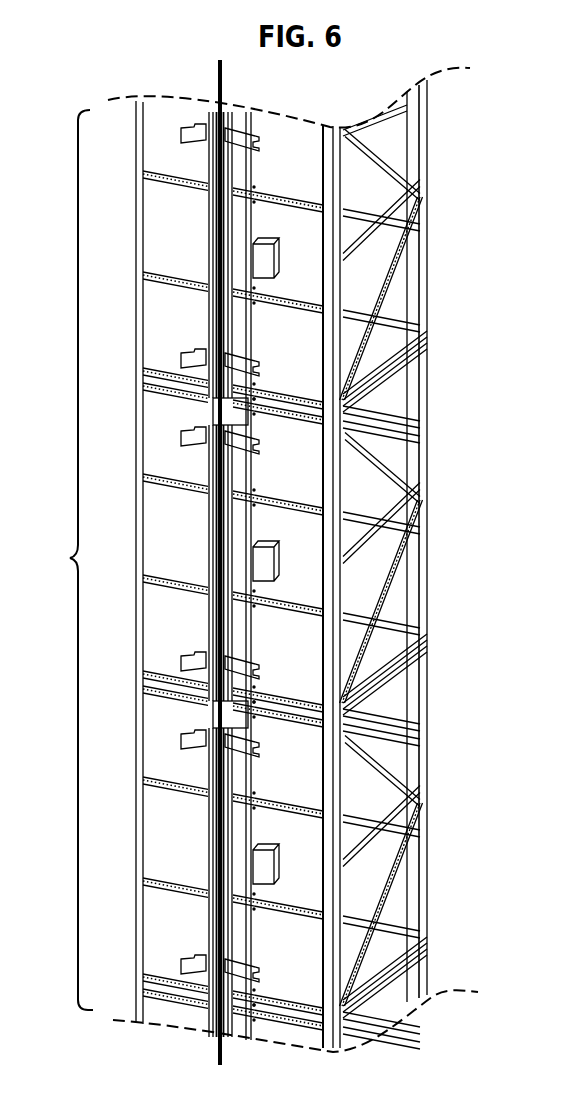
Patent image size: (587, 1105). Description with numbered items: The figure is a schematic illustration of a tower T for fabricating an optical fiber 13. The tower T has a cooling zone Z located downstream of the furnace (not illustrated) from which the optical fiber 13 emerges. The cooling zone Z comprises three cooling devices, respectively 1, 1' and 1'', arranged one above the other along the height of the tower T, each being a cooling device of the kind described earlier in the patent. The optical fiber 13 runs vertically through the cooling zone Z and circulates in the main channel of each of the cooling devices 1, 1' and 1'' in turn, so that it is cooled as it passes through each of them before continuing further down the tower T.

The cooling device 1 is at (167, 255).
The cooling device 1' is at (167, 563).
The cooling device 1'' is at (167, 882).
The optical fiber 13 is at (216, 85).
The tower T is at (302, 853).
The cooling zone Z is at (70, 560).